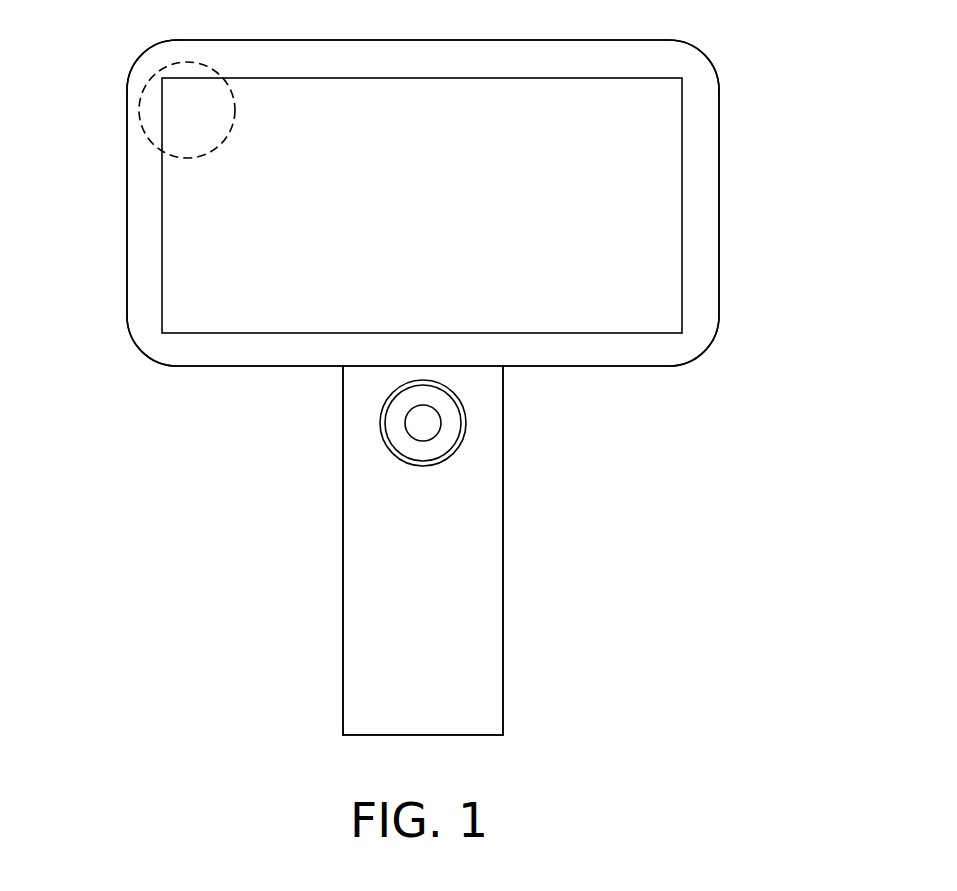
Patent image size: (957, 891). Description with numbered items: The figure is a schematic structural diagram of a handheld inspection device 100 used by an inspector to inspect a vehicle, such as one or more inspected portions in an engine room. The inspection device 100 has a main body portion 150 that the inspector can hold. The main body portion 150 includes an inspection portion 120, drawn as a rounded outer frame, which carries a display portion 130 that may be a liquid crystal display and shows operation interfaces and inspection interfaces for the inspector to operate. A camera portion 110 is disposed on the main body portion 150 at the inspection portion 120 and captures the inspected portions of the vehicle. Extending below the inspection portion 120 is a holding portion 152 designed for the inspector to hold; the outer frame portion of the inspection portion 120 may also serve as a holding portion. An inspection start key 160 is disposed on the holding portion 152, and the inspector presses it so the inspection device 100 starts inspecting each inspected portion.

The inspection device 100 is at (861, 62).
The camera portion 110 is at (187, 103).
The inspection portion 120 is at (721, 113).
The display portion 130 is at (647, 218).
The main body portion 150 is at (329, 493).
The holding portion 152 is at (346, 593).
The inspection start key 160 is at (430, 425).